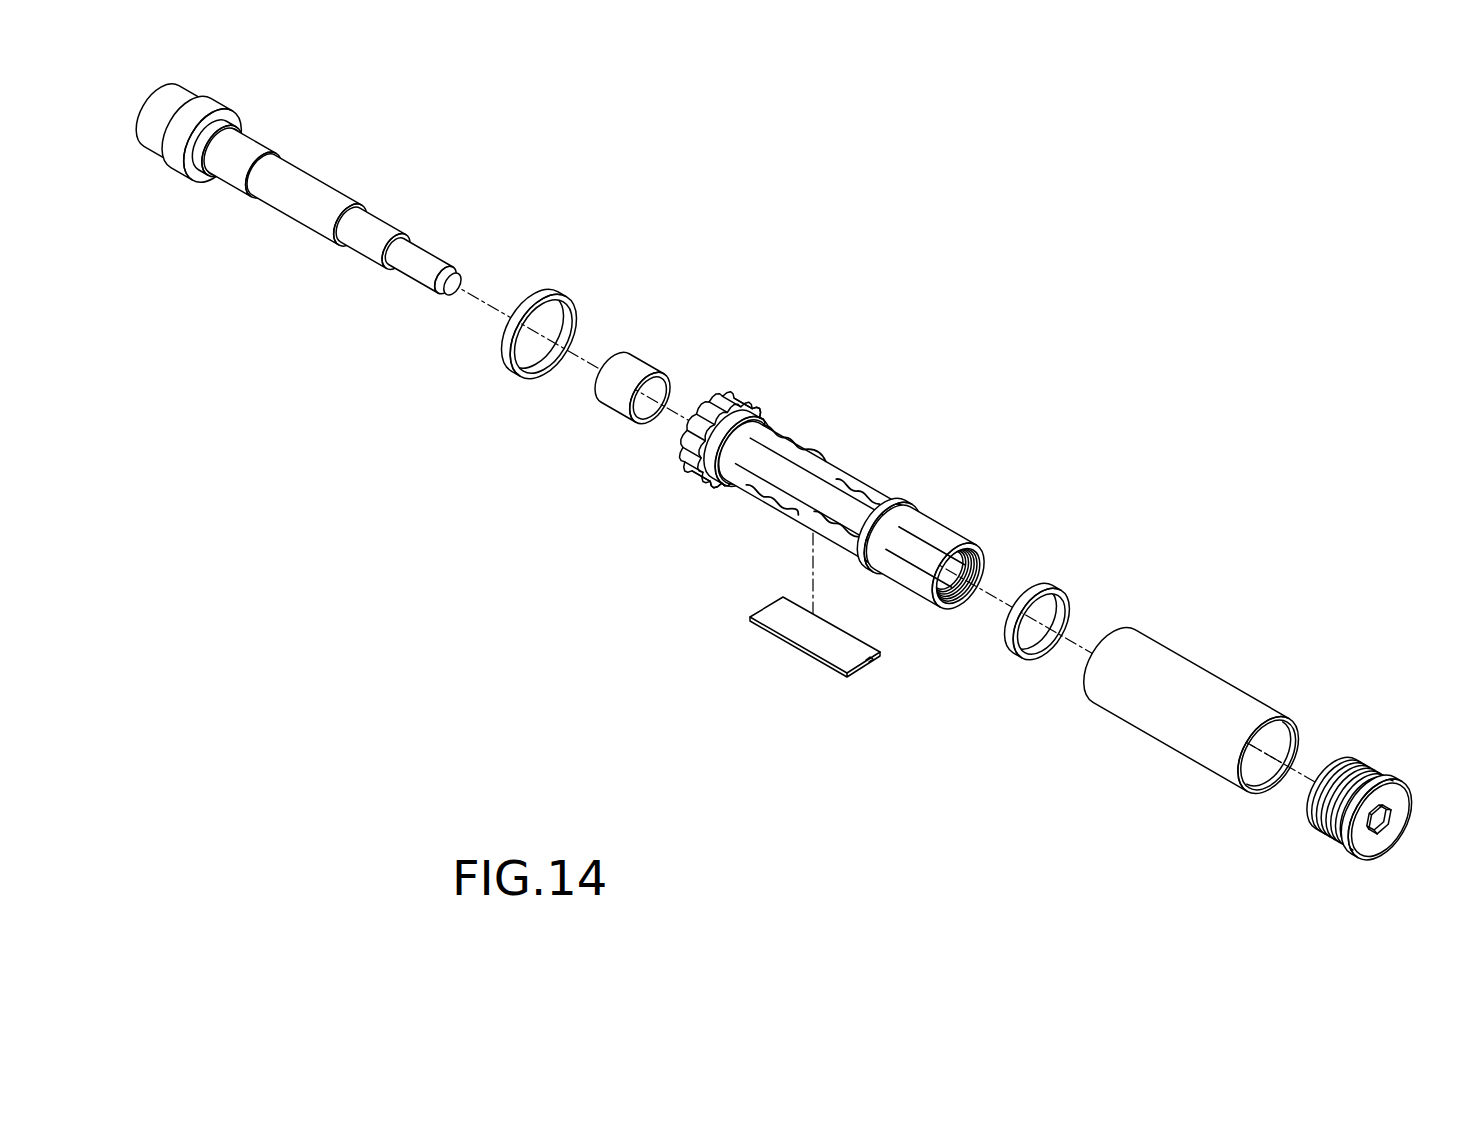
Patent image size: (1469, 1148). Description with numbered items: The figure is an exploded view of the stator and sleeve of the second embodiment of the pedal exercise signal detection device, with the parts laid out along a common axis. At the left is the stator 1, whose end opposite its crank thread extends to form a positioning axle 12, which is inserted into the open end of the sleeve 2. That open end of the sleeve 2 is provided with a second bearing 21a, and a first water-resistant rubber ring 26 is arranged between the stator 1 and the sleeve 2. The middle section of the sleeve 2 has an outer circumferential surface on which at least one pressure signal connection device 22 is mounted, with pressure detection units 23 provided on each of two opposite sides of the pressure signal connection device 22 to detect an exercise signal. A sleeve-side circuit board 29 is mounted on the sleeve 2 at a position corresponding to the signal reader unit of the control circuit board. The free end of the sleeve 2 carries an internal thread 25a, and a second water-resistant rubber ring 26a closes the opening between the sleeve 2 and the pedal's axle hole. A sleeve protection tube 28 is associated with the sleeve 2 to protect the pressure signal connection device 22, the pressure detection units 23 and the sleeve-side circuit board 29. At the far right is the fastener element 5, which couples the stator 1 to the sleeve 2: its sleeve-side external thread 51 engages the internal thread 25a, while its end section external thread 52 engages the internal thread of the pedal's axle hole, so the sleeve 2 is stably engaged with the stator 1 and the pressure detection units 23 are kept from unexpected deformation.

The stator 1 is at (233, 178).
The positioning axle 12 is at (320, 222).
The sleeve 2 is at (830, 521).
The second bearing 21a is at (617, 403).
The pressure signal connection device 22 is at (858, 478).
The pressure detection units 23 is at (765, 430).
The internal thread 25a is at (960, 606).
The first water-resistant rubber ring 26 is at (503, 355).
The second water-resistant rubber ring 26a is at (1010, 645).
The sleeve protection tube 28 is at (1147, 708).
The sleeve-side circuit board 29 is at (775, 632).
The fastener element 5 is at (1337, 793).
The sleeve-side external thread 51 is at (1312, 810).
The end section external thread 52 is at (1350, 845).